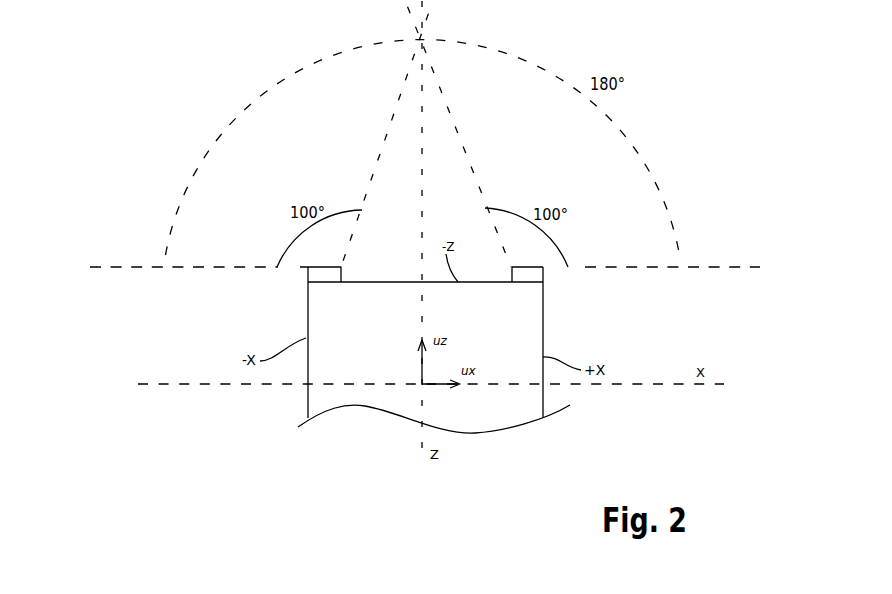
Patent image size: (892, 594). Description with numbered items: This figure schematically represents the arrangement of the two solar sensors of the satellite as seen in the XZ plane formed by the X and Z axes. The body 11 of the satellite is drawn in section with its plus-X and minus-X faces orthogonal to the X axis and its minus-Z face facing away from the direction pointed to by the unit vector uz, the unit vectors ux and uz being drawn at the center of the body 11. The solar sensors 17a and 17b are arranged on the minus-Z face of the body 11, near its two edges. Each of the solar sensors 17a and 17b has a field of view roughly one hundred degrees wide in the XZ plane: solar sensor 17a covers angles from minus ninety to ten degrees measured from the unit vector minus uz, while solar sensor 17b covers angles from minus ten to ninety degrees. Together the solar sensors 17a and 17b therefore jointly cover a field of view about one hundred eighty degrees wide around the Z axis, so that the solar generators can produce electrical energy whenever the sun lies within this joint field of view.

The body 11 is at (543, 321).
The solar sensor 17a is at (306, 280).
The solar sensor 17b is at (543, 271).